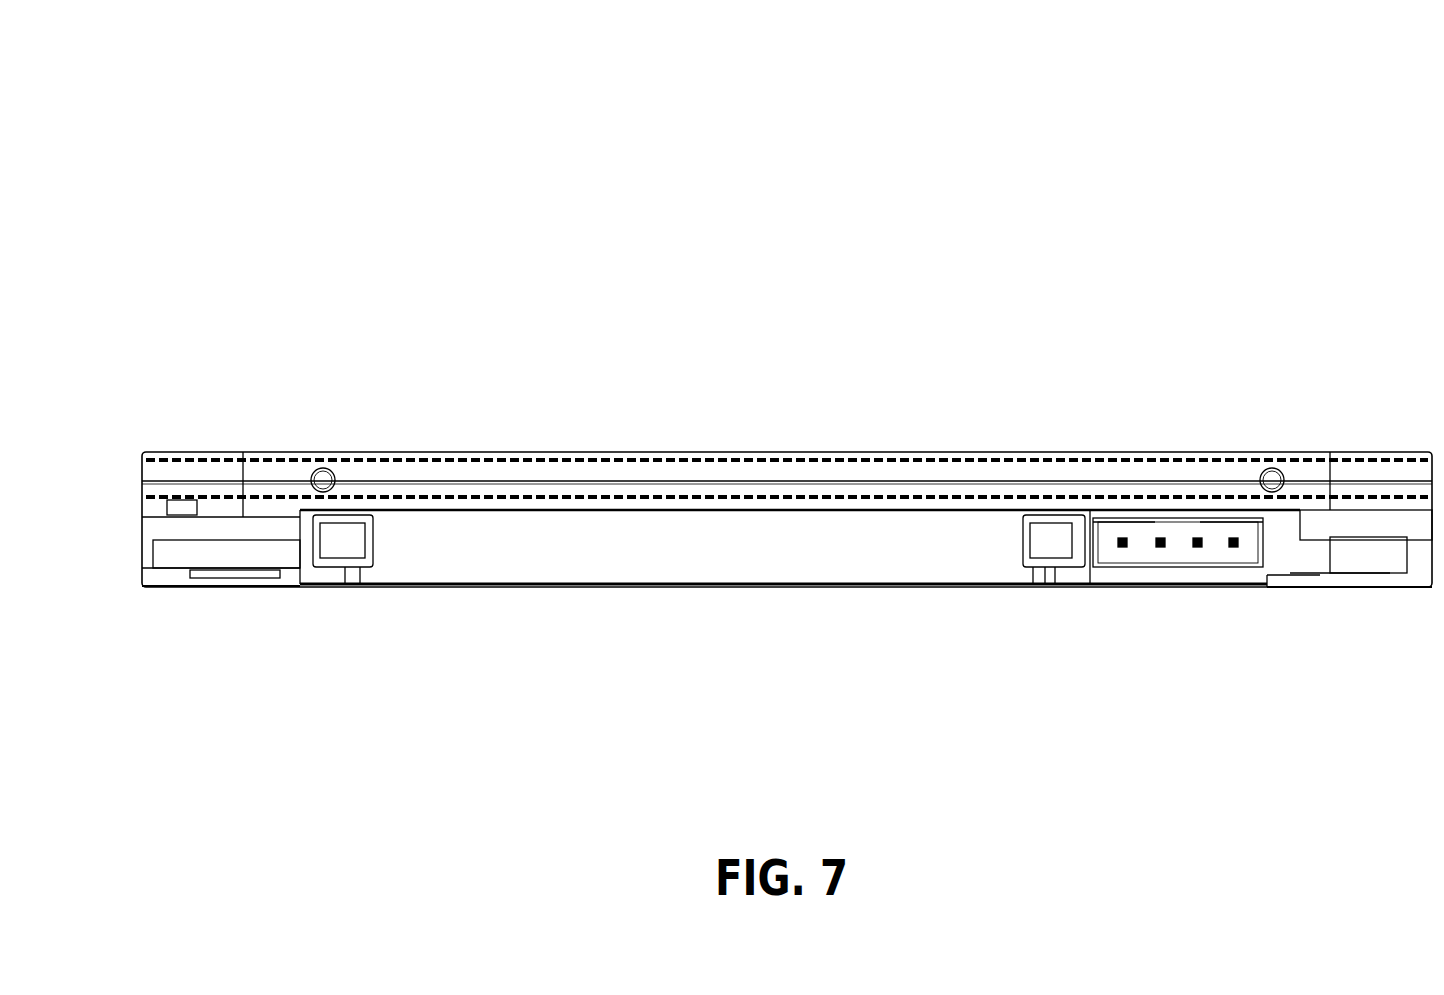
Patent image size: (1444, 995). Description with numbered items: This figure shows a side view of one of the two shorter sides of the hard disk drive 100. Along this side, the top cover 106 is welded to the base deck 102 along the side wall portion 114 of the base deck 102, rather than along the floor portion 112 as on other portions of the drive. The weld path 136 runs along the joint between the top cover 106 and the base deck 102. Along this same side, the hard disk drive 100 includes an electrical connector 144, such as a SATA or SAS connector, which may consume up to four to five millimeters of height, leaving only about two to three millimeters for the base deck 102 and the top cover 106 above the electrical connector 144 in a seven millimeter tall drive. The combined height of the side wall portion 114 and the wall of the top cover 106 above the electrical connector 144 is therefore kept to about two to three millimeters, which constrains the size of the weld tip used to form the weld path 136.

The hard disk drive 100 is at (312, 105).
The base deck 102 is at (1288, 582).
The top cover 106 is at (1268, 452).
The floor portion 112 is at (222, 602).
The side wall portion 114 is at (219, 483).
The weld path 136 is at (717, 460).
The electrical connector 144 is at (1265, 598).